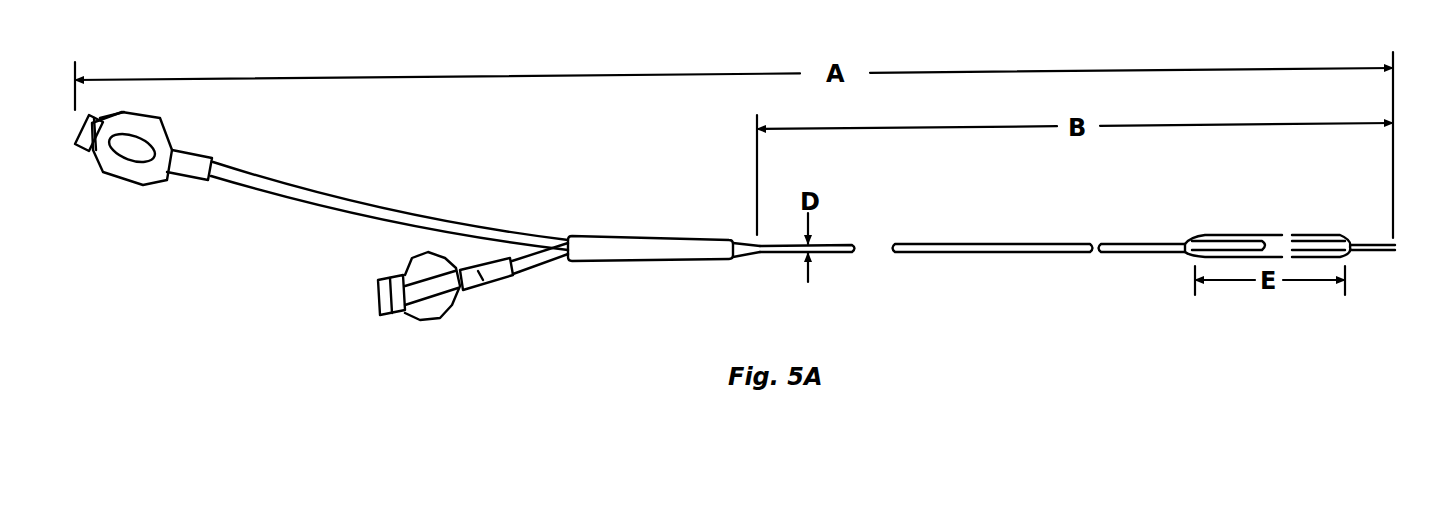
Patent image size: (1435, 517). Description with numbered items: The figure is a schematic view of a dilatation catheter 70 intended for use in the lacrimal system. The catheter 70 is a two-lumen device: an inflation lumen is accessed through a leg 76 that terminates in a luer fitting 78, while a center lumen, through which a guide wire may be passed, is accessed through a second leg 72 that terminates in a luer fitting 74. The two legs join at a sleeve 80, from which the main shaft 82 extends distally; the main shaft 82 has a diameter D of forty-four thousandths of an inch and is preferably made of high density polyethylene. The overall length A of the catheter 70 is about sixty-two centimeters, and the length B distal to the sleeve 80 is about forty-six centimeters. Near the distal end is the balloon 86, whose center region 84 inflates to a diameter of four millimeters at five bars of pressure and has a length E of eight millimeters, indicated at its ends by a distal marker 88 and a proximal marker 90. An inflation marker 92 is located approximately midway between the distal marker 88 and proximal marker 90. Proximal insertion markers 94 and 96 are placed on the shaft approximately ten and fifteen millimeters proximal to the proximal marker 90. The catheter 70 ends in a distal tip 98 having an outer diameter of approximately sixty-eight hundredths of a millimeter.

The catheter 70 is at (652, 148).
The leg 72 is at (528, 273).
The luer fitting 74 is at (403, 312).
The leg 76 is at (393, 212).
The luer fitting 78 is at (112, 183).
The sleeve 80 is at (657, 262).
The main shaft 82 is at (855, 240).
The center region 84 is at (1293, 234).
The balloon 86 is at (1273, 228).
The distal marker 88 is at (1350, 254).
The proximal marker 90 is at (1190, 252).
The inflation marker 92 is at (1263, 236).
The proximal insertion marker 94 is at (1045, 248).
The proximal insertion marker 96 is at (960, 247).
The distal tip 98 is at (1395, 252).